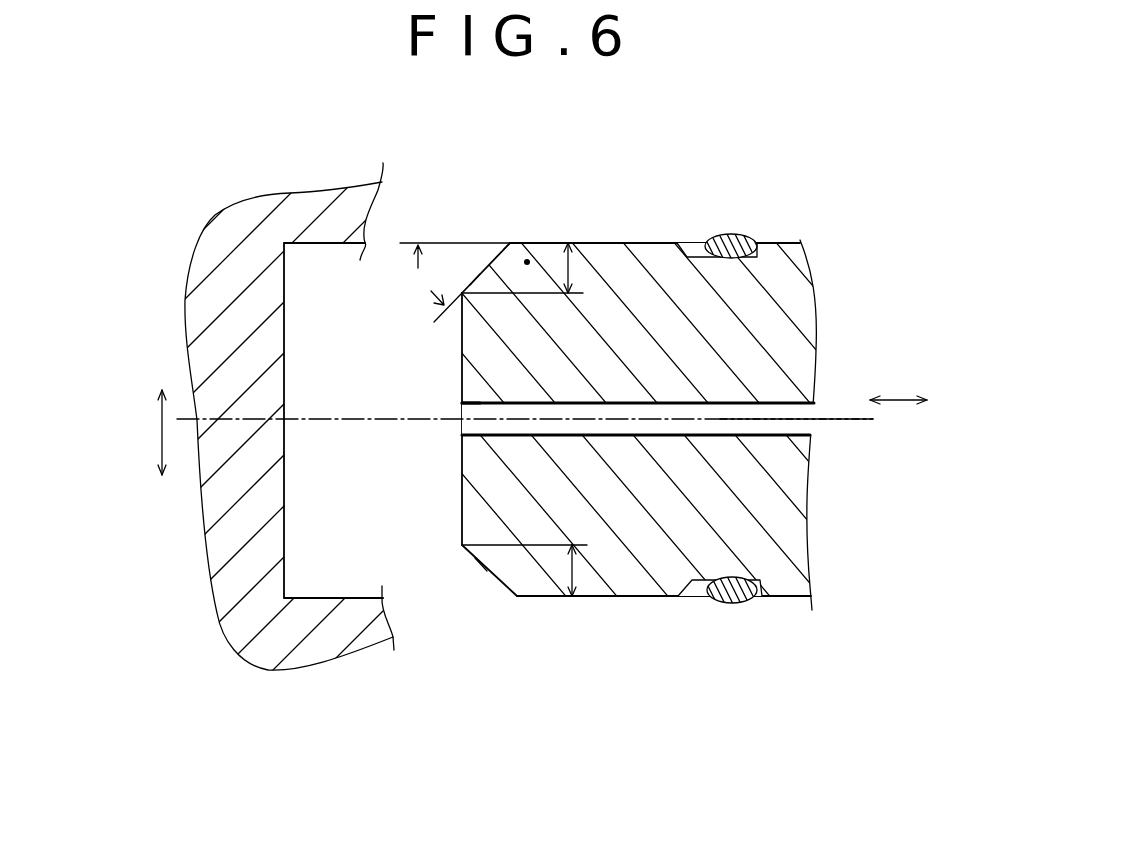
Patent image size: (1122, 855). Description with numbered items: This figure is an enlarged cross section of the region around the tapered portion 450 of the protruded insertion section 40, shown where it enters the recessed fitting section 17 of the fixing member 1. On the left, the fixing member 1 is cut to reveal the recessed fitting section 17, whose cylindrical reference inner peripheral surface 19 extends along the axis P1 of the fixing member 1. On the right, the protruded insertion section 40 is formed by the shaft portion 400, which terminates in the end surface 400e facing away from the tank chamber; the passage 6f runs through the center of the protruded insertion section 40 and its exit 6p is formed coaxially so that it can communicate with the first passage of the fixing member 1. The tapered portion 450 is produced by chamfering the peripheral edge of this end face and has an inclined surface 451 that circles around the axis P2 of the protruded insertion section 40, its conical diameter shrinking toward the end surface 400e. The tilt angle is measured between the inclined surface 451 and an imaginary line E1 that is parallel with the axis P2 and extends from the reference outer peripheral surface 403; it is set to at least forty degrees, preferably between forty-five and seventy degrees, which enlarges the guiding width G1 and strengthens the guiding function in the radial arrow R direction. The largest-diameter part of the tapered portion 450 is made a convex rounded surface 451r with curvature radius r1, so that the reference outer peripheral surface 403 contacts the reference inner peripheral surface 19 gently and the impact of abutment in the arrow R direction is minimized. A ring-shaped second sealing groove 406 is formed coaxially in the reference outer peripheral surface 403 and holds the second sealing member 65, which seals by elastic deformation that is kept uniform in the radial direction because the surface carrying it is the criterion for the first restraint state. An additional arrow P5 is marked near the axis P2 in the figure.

The fixing member 1 is at (257, 207).
The recessed fitting section 17 is at (333, 420).
The reference inner peripheral surface 19 is at (323, 245).
The protruded insertion section 40 is at (671, 408).
The shaft portion 400 is at (802, 560).
The end surface 400e is at (463, 528).
The reference outer peripheral surface 403 is at (662, 241).
The second sealing groove 406 is at (697, 256).
The second sealing member 65 is at (720, 235).
The tapered portion 450 is at (480, 272).
The inclined surface 451 is at (470, 282).
The convex rounded surface 451r is at (509, 243).
The passage 6f is at (790, 405).
The exit 6p is at (485, 410).
The guiding width G1 is at (570, 260).
The imaginary line E1 is at (438, 243).
The curvature radius r1 is at (515, 255).
The arrow R direction R is at (160, 435).
The axis of the fixing member P1 is at (249, 425).
The axis of the protruded insertion section P2 is at (833, 419).
The axial direction P5 is at (900, 398).